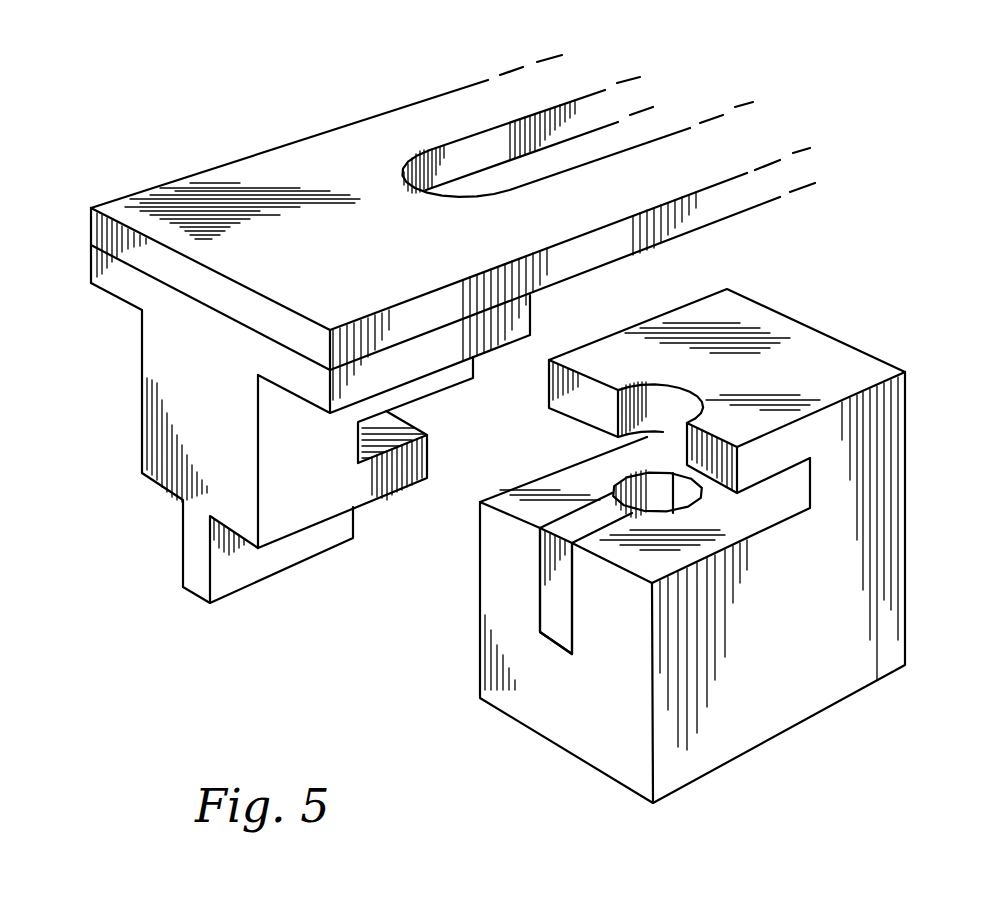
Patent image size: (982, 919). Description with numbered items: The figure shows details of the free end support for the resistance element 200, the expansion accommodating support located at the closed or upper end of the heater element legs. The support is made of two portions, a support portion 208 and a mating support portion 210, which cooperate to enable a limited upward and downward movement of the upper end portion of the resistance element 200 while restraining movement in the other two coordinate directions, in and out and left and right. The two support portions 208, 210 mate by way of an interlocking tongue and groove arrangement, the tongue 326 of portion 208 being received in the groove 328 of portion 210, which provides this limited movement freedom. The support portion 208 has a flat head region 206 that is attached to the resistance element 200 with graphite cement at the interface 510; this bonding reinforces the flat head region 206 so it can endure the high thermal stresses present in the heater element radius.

The resistance element 200 is at (313, 136).
The interface 510 is at (91, 245).
The flat head region 206 is at (92, 263).
The support portion 208 is at (142, 402).
The tongue 326 is at (184, 566).
The support portion 210 is at (906, 420).
The groove 328 is at (540, 630).